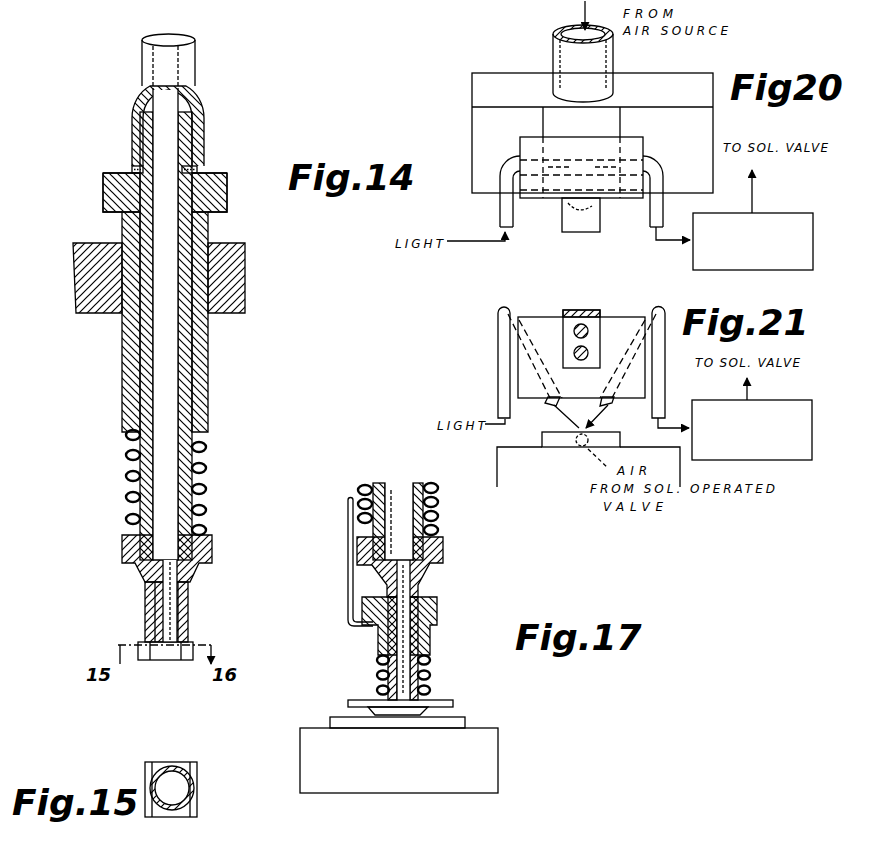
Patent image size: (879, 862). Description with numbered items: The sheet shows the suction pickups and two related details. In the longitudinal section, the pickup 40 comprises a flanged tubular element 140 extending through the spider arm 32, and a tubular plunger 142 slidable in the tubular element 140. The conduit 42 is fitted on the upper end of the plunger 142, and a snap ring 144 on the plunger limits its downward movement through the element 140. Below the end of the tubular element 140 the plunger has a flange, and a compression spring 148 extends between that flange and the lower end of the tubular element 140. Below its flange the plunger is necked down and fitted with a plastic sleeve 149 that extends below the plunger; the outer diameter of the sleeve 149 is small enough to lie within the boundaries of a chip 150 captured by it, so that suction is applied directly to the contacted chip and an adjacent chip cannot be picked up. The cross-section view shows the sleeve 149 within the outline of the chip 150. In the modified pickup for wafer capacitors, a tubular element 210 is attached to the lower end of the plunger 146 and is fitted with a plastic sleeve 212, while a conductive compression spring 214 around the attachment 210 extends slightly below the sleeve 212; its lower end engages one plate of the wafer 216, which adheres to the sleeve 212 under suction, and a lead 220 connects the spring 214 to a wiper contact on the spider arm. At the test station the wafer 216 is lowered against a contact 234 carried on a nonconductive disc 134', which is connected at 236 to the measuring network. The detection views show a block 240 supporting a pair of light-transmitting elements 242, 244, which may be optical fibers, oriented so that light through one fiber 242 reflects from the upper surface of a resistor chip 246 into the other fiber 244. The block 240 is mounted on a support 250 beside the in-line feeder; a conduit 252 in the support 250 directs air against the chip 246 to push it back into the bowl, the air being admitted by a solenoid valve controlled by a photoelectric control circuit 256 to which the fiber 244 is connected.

In FIG. 14, the spider arm 32 is at (80, 243).
In FIG. 14, the pickup 40 is at (214, 371).
In FIG. 14, the conduit 42 is at (190, 63).
In FIG. 14, the flanged tubular element 140 is at (228, 200).
In FIG. 14, the tubular plunger 142 is at (205, 482).
In FIG. 14, the snap ring 144 is at (197, 171).
In FIG. 14, the plunger 146 is at (213, 552).
In FIG. 17, the plunger 146 is at (445, 552).
In FIG. 14, the compression spring 148 is at (207, 443).
In FIG. 17, the compression spring 148 is at (440, 516).
In FIG. 14, the plastic sleeve 149 is at (190, 606).
In FIG. 15, the plastic sleeve 149 is at (172, 812).
In FIG. 14, the chip 150 is at (196, 650).
In FIG. 15, the chip 150 is at (197, 772).
In FIG. 17, the tubular element 210 is at (440, 606).
In FIG. 17, the plastic sleeve 212 is at (430, 667).
In FIG. 17, the conductive compression spring 214 is at (375, 661).
In FIG. 17, the wafer 216 is at (356, 700).
In FIG. 17, the lead 220 is at (348, 512).
In FIG. 17, the contact 234 is at (360, 720).
In FIG. 17, the connection to measuring network 236 is at (430, 708).
In FIG. 17, the nonconductive disc 134' is at (433, 760).
In FIG. 20, the block 240 is at (528, 137).
In FIG. 21, the block 240 is at (540, 320).
In FIG. 20, the light-transmitting element 242 is at (498, 210).
In FIG. 21, the light-transmitting element 242 is at (497, 367).
In FIG. 20, the light-transmitting element 244 is at (648, 213).
In FIG. 21, the light-transmitting element 244 is at (665, 383).
In FIG. 21, the resistor chip 246 is at (540, 440).
In FIG. 20, the support 250 is at (472, 80).
In FIG. 20, the conduit 252 is at (553, 45).
In FIG. 20, the photoelectric control circuit 256 is at (768, 213).
In FIG. 21, the photoelectric control circuit 256 is at (775, 400).